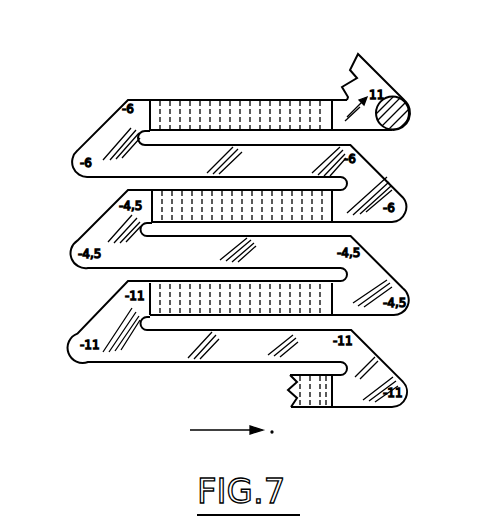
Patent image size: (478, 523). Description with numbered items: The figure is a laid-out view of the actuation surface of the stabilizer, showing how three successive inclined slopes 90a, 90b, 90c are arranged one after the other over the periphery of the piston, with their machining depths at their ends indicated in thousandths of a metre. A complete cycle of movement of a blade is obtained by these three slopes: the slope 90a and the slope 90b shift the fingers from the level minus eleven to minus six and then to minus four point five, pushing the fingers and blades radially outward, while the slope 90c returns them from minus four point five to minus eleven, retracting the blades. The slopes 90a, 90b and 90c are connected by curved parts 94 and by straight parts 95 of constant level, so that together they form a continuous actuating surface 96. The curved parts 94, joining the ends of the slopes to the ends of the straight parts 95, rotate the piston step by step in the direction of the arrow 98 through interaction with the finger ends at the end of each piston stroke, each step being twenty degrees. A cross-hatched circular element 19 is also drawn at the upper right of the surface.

The curved parts 94 is at (108, 137).
The straight parts 95 is at (199, 168).
The continuous actuating surface 96 is at (221, 99).
The inclined slope 90a is at (271, 86).
The inclined slope 90b is at (243, 201).
The inclined slope 90c is at (253, 296).
The rod 19 is at (402, 99).
The arrow 98 is at (231, 419).